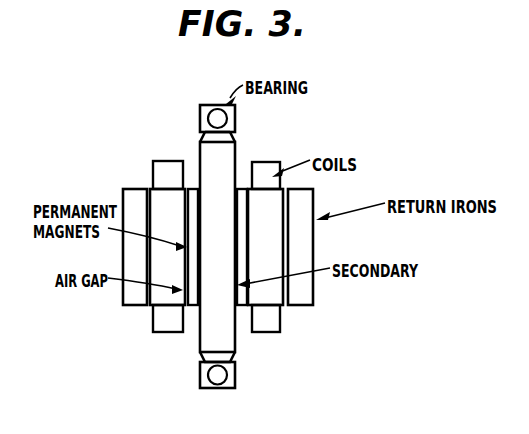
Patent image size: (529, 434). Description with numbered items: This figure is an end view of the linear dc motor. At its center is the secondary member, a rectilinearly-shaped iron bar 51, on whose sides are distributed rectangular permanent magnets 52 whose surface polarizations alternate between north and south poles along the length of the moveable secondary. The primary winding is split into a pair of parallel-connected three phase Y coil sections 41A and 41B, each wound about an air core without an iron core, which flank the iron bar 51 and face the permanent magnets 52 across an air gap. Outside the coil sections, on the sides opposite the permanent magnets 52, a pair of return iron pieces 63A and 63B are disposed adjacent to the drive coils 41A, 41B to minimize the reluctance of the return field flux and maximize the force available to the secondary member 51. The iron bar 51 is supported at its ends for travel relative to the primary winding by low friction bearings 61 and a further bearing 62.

The iron bar 51 is at (228, 150).
The permanent magnets 52 is at (195, 188).
The low friction bearings 61 is at (215, 118).
The bearing 62 is at (210, 373).
The coil section 41A is at (264, 327).
The coil section 41B is at (169, 323).
The return iron piece 63A is at (306, 299).
The return iron piece 63B is at (126, 300).